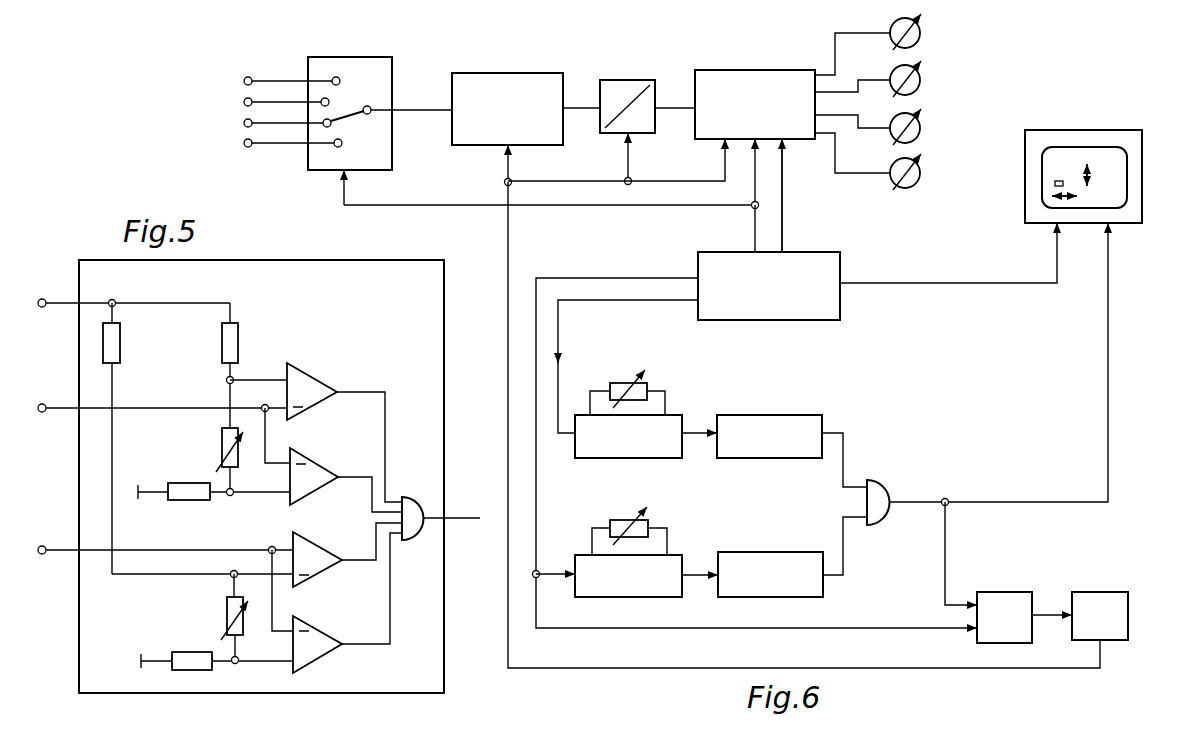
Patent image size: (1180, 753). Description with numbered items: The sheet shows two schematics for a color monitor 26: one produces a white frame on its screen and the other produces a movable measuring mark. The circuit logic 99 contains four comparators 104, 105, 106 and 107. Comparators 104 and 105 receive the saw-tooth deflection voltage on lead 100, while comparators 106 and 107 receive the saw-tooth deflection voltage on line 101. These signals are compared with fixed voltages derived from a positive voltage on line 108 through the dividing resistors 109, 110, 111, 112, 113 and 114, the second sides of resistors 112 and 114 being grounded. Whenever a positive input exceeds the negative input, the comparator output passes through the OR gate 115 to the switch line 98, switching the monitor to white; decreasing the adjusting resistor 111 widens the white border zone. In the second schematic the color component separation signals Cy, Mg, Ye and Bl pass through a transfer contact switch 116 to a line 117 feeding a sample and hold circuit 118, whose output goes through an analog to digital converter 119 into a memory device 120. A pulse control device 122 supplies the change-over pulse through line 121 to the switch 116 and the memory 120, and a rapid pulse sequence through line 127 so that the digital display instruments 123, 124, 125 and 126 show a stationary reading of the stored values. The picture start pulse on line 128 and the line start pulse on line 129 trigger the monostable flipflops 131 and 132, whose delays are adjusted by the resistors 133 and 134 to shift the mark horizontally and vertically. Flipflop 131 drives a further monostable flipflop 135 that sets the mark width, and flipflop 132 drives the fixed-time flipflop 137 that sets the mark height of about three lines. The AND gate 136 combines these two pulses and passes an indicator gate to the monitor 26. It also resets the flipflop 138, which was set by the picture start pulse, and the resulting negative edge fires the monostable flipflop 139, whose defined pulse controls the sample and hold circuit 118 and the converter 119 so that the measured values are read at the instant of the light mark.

In FIG. 6, the monitor 26 is at (1067, 130).
In FIG. 5, the switch line 98 is at (457, 513).
In FIG. 5, the circuit logic 99 is at (286, 262).
In FIG. 5, the lead 100 is at (62, 406).
In FIG. 5, the line 101 is at (62, 548).
In FIG. 5, the comparator 104 is at (310, 385).
In FIG. 5, the comparator 105 is at (312, 467).
In FIG. 5, the comparator 106 is at (313, 553).
In FIG. 5, the comparator 107 is at (320, 636).
In FIG. 5, the line 108 is at (62, 300).
In FIG. 5, the dividing resistor 109 is at (116, 352).
In FIG. 5, the dividing resistor 110 is at (235, 352).
In FIG. 5, the adjusting resistor 111 is at (222, 446).
In FIG. 5, the dividing resistor 112 is at (188, 500).
In FIG. 5, the dividing resistor 113 is at (227, 610).
In FIG. 5, the dividing resistor 114 is at (186, 653).
In FIG. 5, the OR gate 115 is at (410, 496).
In FIG. 6, the transfer contact switch 116 is at (386, 85).
In FIG. 6, the line 117 is at (425, 112).
In FIG. 6, the sample and hold circuit 118 is at (508, 78).
In FIG. 6, the analog to digital converter 119 is at (630, 80).
In FIG. 6, the memory device 120 is at (722, 80).
In FIG. 6, the line 121 is at (706, 206).
In FIG. 6, the pulse control device 122 is at (843, 270).
In FIG. 6, the digital display instrument 123 is at (919, 38).
In FIG. 6, the digital display instrument 124 is at (919, 85).
In FIG. 6, the digital display instrument 125 is at (919, 133).
In FIG. 6, the digital display instrument 126 is at (919, 178).
In FIG. 6, the line 127 is at (782, 240).
In FIG. 6, the line 128 is at (598, 278).
In FIG. 6, the line 129 is at (668, 300).
In FIG. 6, the monostable flipflop 131 is at (650, 458).
In FIG. 6, the monostable flipflop 132 is at (610, 590).
In FIG. 6, the resistor 133 is at (613, 383).
In FIG. 6, the resistor 134 is at (613, 520).
In FIG. 6, the monostable flipflop 135 is at (757, 415).
In FIG. 6, the AND gate 136 is at (882, 490).
In FIG. 6, the monostable flipflop 137 is at (757, 553).
In FIG. 6, the flipflop 138 is at (997, 600).
In FIG. 6, the monostable flipflop 139 is at (1092, 600).